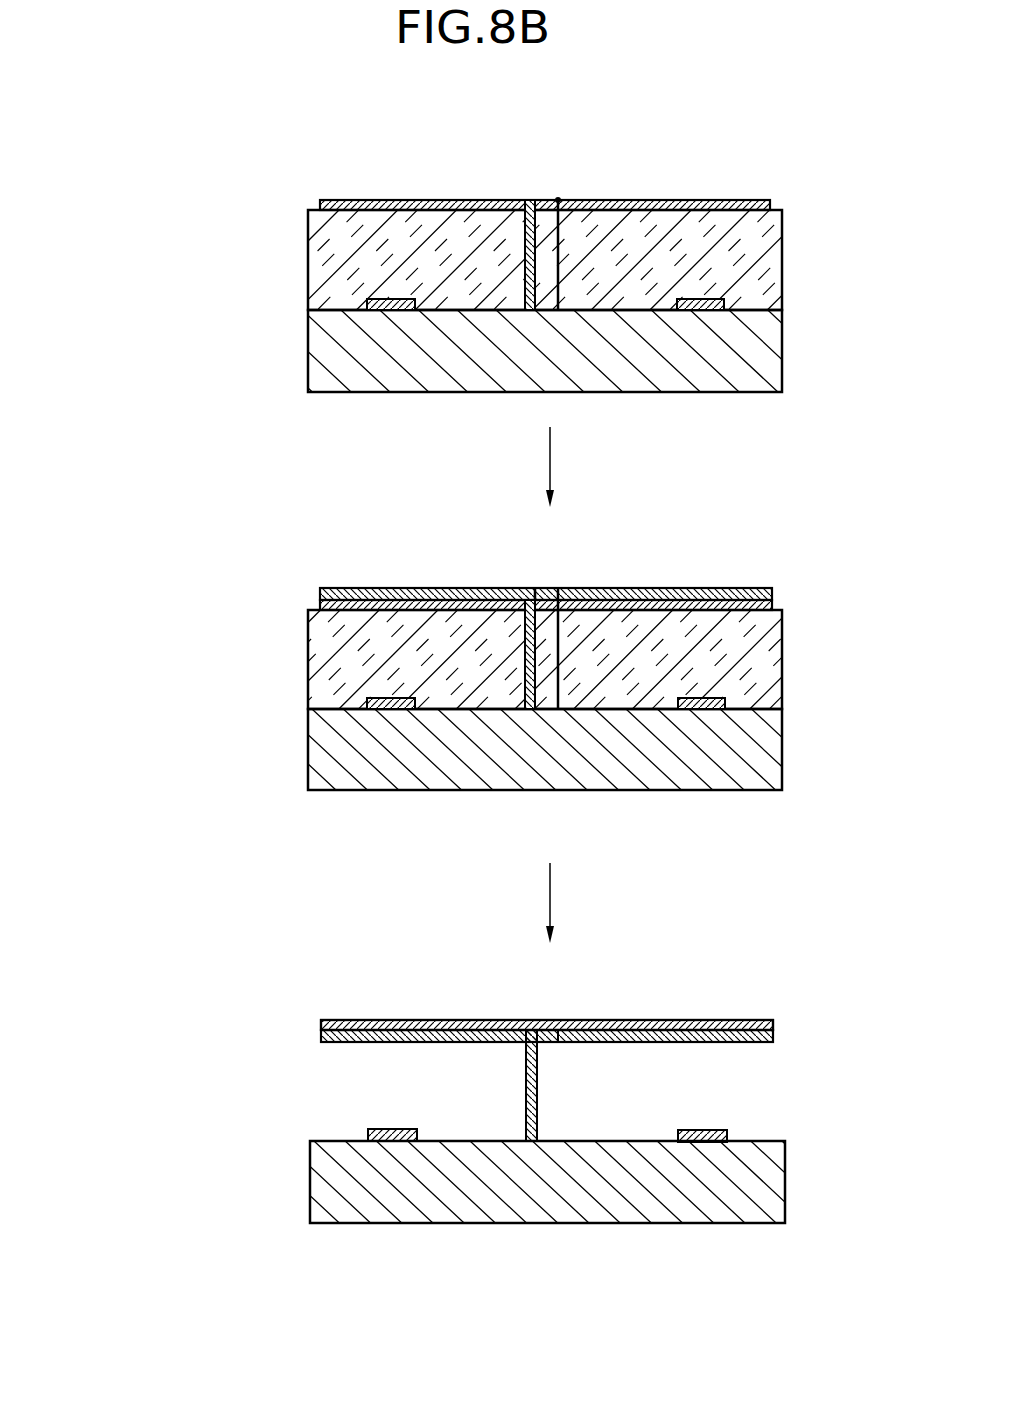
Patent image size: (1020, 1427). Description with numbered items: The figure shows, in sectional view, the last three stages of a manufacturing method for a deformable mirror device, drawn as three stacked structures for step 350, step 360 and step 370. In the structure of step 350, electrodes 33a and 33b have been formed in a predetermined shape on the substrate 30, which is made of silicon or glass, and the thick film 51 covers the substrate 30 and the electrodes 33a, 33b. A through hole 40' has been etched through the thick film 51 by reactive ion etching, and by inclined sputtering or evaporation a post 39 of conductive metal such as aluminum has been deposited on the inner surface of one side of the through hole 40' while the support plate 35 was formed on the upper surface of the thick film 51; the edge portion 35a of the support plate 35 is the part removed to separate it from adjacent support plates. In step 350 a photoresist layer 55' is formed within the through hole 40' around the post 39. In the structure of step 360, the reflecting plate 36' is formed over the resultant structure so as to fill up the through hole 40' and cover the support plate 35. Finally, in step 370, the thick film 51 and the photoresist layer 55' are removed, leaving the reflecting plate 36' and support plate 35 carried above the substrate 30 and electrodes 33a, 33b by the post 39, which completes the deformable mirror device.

The step of forming photoresist layer 350 is at (162, 242).
The step of forming reflecting plate 360 is at (162, 640).
The step of removing thick film and photoresist layer 370 is at (162, 1072).
The substrate 30 is at (745, 369).
The electrode 33a is at (773, 307).
The electrode 33b is at (405, 311).
The support plate 35 is at (772, 207).
The edge portion of the support plate 35a is at (320, 204).
The reflecting plate 36' is at (603, 789).
The post 39 is at (524, 247).
The through hole 40' is at (625, 426).
The thick film 51 is at (753, 256).
The photoresist layer 55' is at (362, 459).